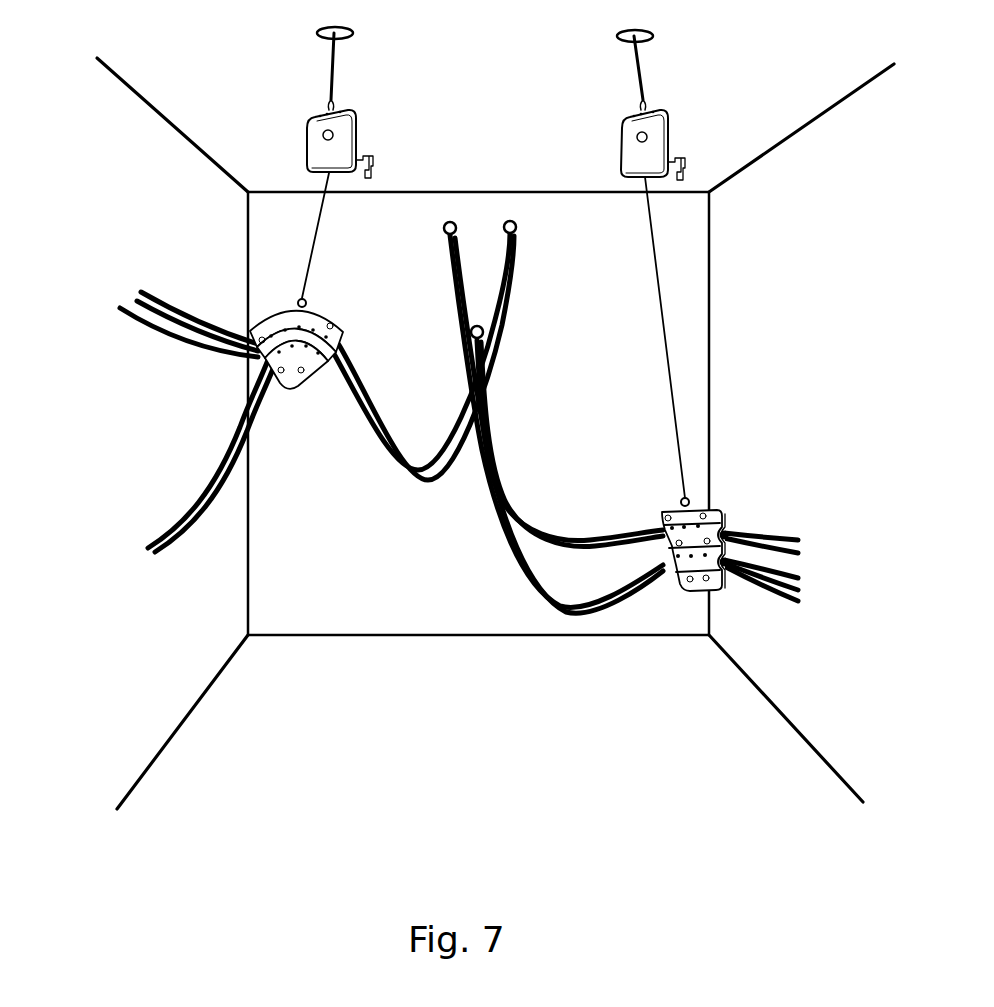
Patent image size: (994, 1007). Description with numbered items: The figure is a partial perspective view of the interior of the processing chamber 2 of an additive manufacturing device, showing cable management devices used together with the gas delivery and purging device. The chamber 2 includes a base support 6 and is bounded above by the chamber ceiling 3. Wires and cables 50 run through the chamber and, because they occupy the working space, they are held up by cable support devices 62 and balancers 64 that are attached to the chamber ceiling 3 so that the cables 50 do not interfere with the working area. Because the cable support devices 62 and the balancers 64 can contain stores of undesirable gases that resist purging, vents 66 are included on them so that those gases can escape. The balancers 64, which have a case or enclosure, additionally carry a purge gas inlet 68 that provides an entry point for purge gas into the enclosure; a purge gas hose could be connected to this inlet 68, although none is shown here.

The processing chamber 2 is at (104, 180).
The chamber ceiling 3 is at (508, 32).
The base support 6 is at (757, 762).
The cables 50 is at (513, 298).
The cable support device 62 is at (324, 318).
The balancer 64 is at (350, 114).
The vent 66 is at (323, 109).
The purge gas inlet 68 is at (369, 156).